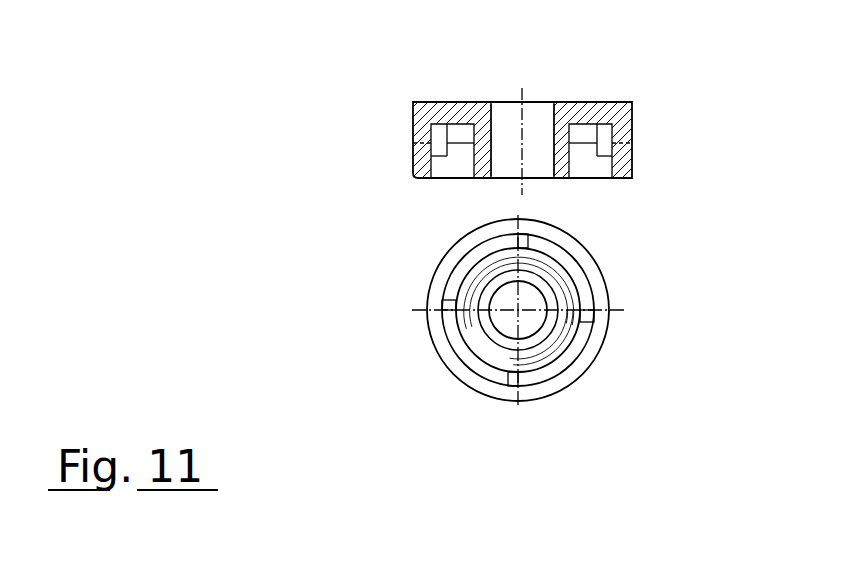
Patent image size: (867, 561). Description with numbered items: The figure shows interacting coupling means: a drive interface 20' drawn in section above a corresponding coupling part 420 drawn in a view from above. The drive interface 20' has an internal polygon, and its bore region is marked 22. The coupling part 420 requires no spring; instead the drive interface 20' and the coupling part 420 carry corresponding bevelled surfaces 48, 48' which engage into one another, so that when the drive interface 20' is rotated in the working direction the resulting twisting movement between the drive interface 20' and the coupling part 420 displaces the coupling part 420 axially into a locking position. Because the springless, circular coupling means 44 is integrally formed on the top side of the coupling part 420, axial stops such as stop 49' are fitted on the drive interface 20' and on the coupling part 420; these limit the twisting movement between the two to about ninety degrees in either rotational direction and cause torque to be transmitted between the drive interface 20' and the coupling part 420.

The drive interface 20' is at (486, 141).
The central bore 22 is at (545, 122).
The bevelled surface 48' is at (388, 199).
The axial stop 49' is at (643, 173).
The coupling part 420 is at (452, 360).
The circular coupling means 44 is at (594, 311).
The bevelled surface 48 is at (438, 311).